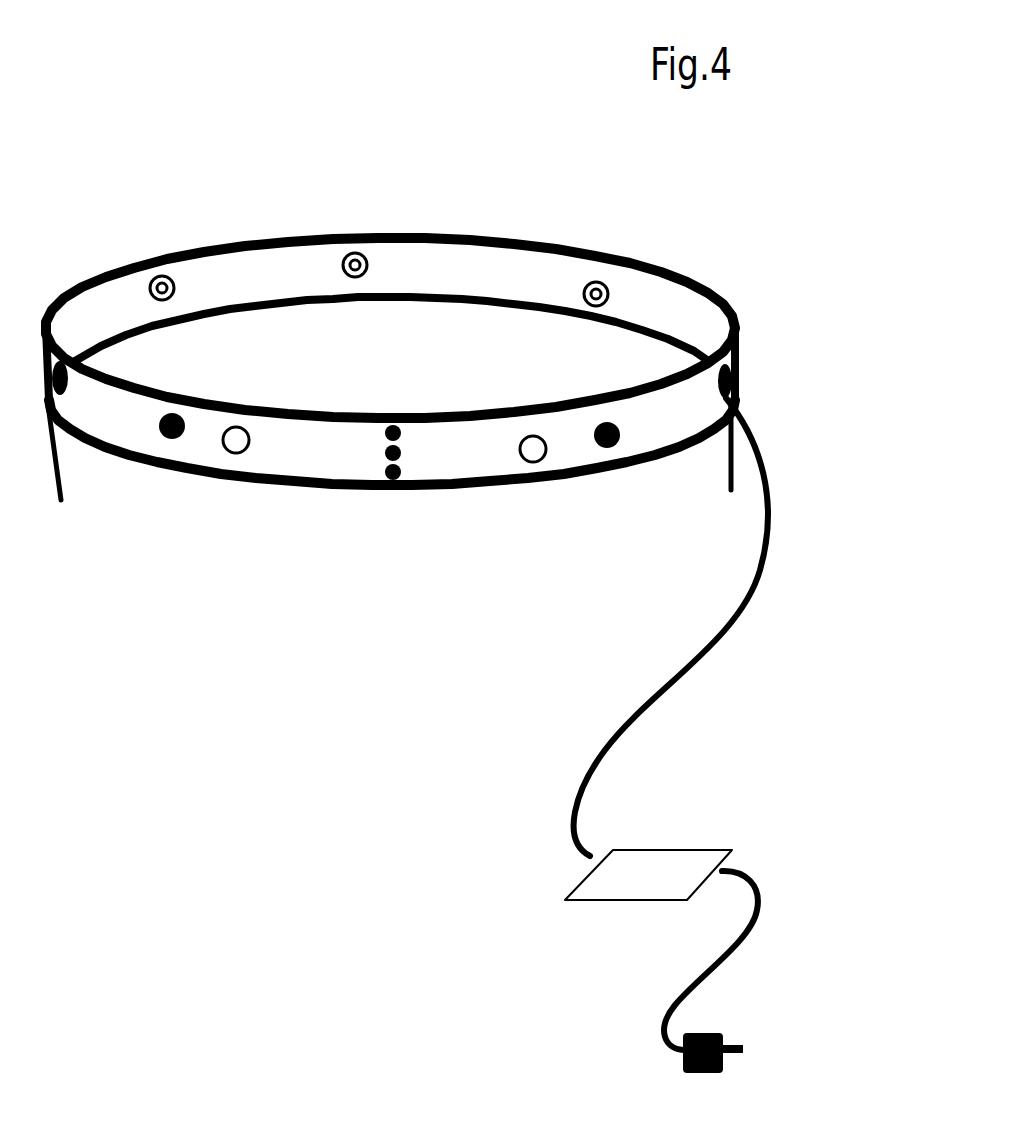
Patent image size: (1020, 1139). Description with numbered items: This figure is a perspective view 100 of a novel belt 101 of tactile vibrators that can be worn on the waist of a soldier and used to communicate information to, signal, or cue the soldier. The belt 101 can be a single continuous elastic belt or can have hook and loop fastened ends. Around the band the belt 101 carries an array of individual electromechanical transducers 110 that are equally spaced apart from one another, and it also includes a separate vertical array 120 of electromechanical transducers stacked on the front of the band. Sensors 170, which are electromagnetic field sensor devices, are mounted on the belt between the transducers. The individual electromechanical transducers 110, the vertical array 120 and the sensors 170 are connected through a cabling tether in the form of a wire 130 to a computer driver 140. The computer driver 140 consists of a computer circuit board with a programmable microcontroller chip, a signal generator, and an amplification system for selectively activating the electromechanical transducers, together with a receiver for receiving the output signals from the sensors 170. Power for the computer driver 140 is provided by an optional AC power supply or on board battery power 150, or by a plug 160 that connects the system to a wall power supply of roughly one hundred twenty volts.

The perspective view 100 is at (172, 83).
The belt 101 is at (457, 490).
The electromechanical transducers 110 is at (590, 273).
The vertical array of electromechanical transducers 120 is at (372, 430).
The wire 130 is at (751, 629).
The computer driver 140 is at (706, 839).
The on board battery power 150 is at (720, 887).
The plug 160 is at (677, 1058).
The sensors 170 is at (228, 463).